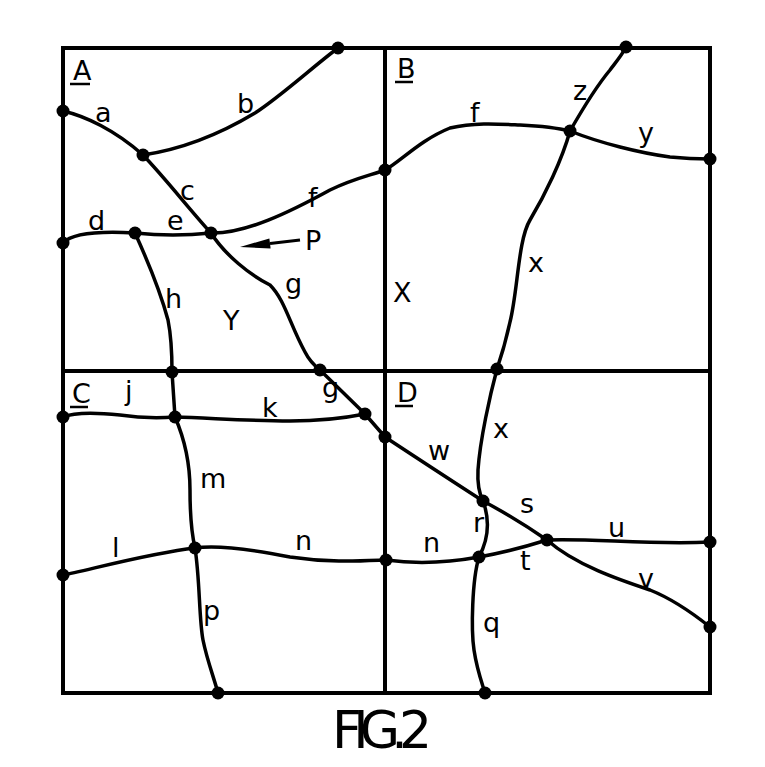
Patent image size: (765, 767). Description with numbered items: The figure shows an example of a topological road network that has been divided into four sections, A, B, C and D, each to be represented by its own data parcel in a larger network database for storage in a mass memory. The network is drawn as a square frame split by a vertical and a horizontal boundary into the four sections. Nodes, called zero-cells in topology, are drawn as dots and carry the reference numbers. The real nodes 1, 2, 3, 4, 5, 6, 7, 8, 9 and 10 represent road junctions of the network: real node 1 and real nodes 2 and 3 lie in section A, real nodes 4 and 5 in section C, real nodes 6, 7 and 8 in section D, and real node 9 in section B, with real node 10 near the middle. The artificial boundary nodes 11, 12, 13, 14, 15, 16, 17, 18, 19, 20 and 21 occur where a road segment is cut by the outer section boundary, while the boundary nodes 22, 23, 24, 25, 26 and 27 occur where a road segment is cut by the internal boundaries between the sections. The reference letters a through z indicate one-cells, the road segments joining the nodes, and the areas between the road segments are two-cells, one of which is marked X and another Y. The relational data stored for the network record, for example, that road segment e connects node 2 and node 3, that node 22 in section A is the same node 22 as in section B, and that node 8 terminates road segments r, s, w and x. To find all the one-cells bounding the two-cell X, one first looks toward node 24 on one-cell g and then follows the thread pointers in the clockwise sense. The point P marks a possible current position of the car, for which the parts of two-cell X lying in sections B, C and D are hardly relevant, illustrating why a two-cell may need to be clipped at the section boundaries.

The real node 1 is at (137, 163).
The real node 2 is at (132, 248).
The real node 3 is at (209, 248).
The real node 4 is at (182, 406).
The real node 5 is at (200, 536).
The real node 6 is at (487, 568).
The real node 7 is at (550, 526).
The real node 8 is at (491, 490).
The real node 9 is at (573, 146).
The real node 10 is at (367, 399).
The boundary node 11 is at (51, 110).
The boundary node 12 is at (51, 243).
The boundary node 13 is at (51, 417).
The boundary node 14 is at (51, 577).
The boundary node 15 is at (220, 710).
The boundary node 16 is at (488, 708).
The boundary node 17 is at (724, 627).
The boundary node 18 is at (724, 540).
The boundary node 19 is at (724, 160).
The boundary node 20 is at (634, 31).
The boundary node 21 is at (339, 31).
The boundary node 22 is at (399, 182).
The boundary node 23 is at (512, 357).
The boundary node 24 is at (331, 357).
The boundary node 25 is at (185, 358).
The boundary node 26 is at (400, 432).
The boundary node 27 is at (398, 574).